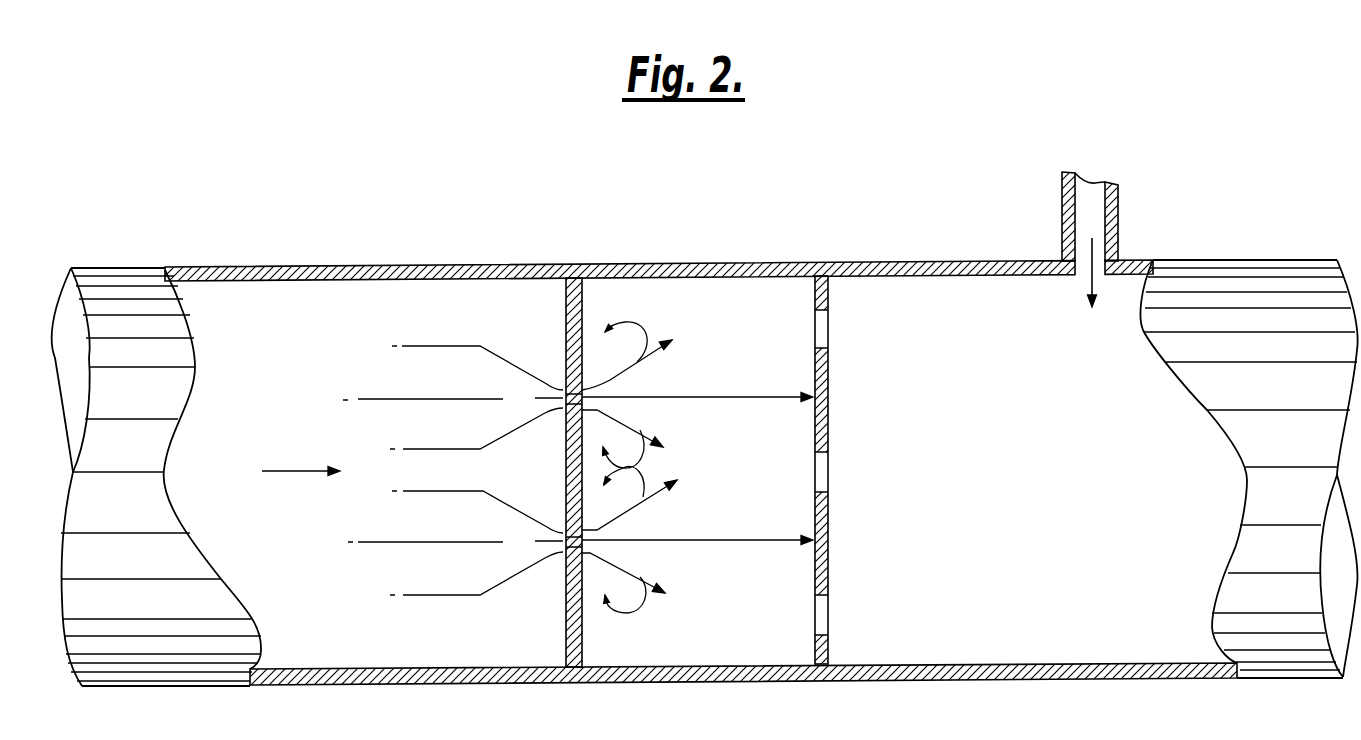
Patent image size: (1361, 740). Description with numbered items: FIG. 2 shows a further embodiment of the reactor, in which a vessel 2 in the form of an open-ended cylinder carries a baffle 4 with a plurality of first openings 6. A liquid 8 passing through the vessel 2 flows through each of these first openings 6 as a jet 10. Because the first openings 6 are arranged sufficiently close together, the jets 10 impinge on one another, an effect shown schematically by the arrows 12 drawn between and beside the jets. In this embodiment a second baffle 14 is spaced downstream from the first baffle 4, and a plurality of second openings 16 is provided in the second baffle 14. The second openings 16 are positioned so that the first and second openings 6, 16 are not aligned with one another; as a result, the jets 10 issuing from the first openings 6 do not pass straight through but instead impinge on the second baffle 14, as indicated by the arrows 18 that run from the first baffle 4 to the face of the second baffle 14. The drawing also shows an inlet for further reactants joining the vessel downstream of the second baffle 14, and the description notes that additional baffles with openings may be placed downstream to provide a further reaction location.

The vessel 2 is at (467, 265).
The baffle 4 is at (575, 309).
The first openings 6 is at (563, 410).
The liquid 8 is at (262, 364).
The jet 10 is at (620, 370).
The arrows 12 is at (647, 468).
The second baffle 14 is at (821, 302).
The second openings 16 is at (822, 330).
The arrows 18 is at (723, 397).